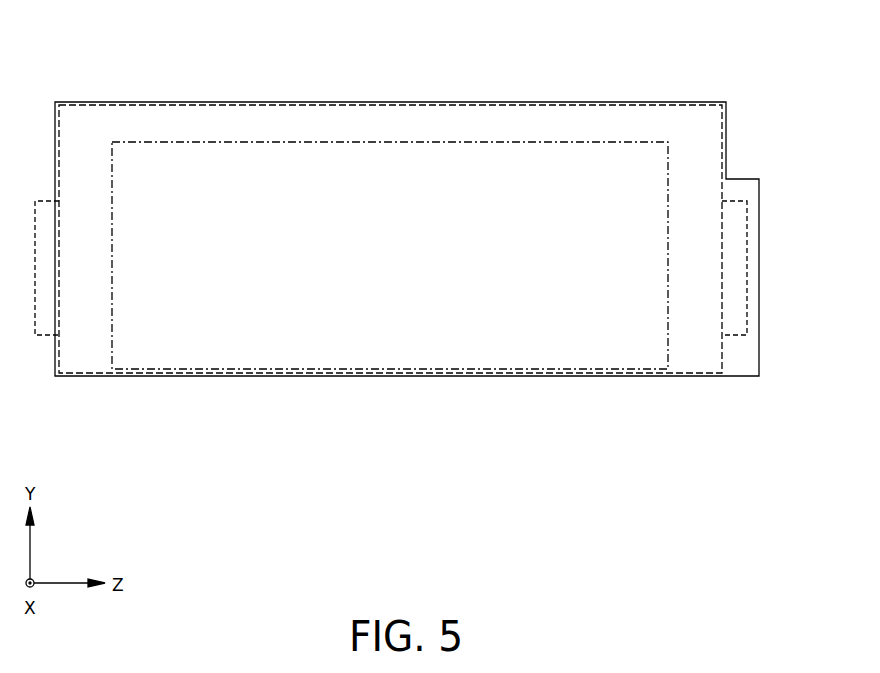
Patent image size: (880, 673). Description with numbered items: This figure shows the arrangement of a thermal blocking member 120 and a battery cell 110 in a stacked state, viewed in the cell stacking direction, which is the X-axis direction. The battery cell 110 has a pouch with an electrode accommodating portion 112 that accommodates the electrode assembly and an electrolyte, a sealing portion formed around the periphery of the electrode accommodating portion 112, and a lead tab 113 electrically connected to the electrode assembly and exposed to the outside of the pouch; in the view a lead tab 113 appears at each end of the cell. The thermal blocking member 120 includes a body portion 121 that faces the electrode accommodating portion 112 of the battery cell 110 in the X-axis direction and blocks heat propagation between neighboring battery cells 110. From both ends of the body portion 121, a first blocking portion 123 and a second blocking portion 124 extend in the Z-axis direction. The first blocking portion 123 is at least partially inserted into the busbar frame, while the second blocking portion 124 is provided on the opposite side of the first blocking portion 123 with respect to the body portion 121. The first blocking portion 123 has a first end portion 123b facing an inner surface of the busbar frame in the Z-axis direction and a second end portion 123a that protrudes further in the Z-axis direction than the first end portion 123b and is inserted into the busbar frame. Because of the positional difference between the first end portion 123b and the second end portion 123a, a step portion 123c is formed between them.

The battery cell 110 is at (405, 345).
The electrode accommodating portion 112 is at (668, 330).
The lead tab 113 is at (43, 330).
The thermal blocking member 120 is at (190, 97).
The body portion 121 is at (300, 123).
The first blocking portion 123 is at (695, 122).
The second end portion 123a is at (759, 272).
The first end portion 123b is at (727, 119).
The step portion 123c is at (738, 178).
The second blocking portion 124 is at (85, 130).